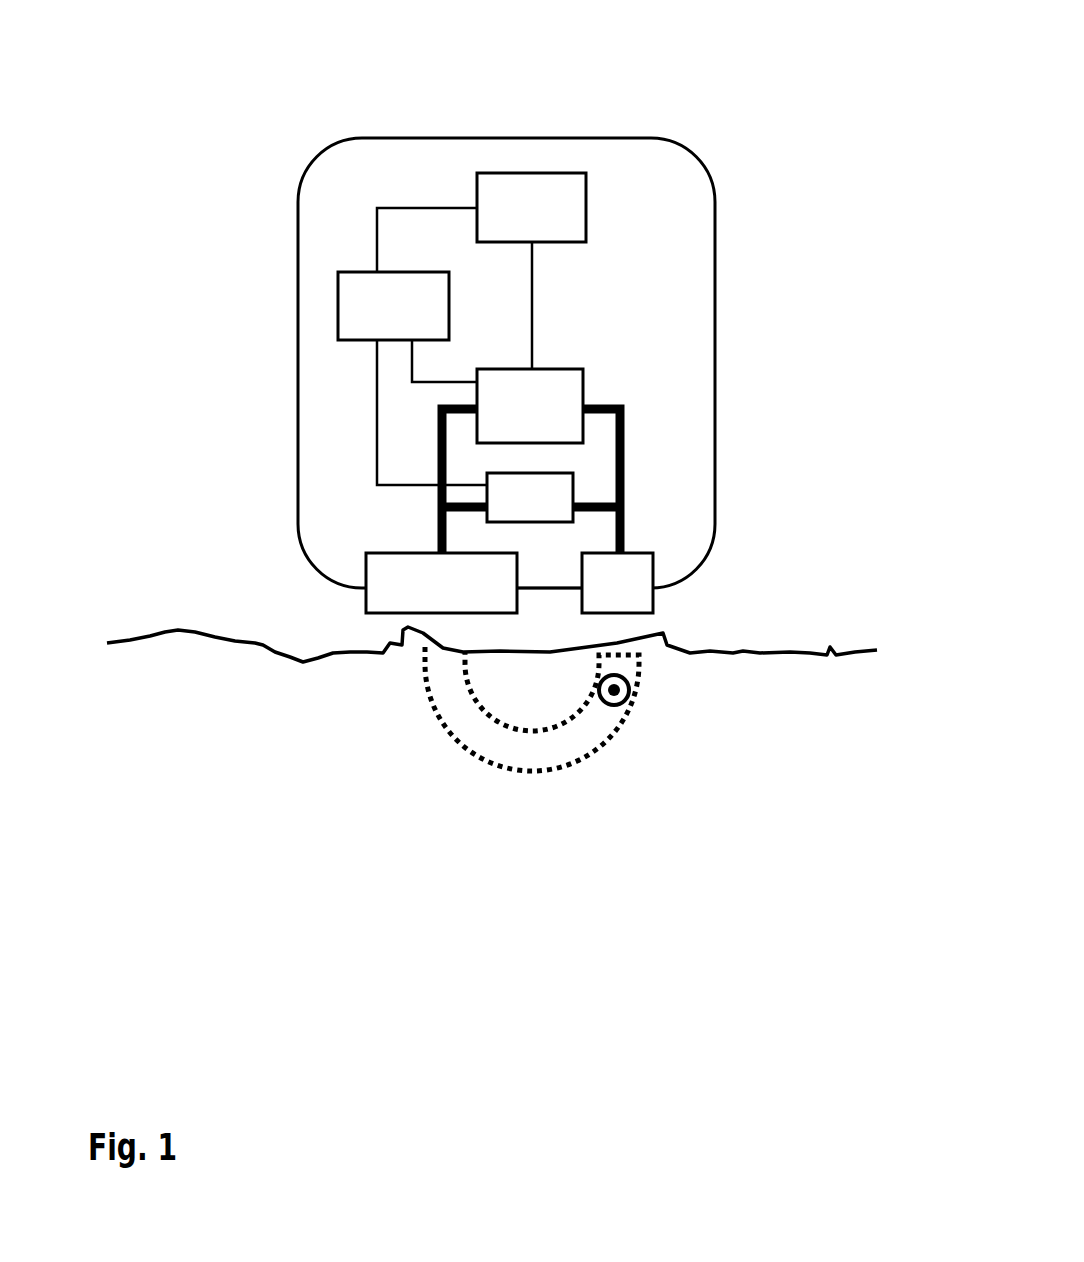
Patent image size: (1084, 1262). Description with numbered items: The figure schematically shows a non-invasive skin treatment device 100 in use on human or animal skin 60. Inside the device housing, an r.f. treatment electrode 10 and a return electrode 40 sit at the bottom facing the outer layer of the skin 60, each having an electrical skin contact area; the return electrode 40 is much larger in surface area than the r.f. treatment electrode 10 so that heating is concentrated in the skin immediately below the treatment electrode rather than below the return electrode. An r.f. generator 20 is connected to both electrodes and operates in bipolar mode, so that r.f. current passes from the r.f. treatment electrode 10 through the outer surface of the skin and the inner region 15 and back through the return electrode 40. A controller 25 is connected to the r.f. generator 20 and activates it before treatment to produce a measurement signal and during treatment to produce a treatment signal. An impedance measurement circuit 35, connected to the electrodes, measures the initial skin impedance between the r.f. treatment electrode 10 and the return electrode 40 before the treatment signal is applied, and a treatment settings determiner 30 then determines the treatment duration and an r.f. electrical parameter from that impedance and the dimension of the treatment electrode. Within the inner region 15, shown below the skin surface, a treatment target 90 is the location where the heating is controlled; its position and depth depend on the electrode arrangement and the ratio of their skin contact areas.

The non-invasive skin treatment device 100 is at (321, 108).
The controller 25 is at (531, 207).
The treatment settings determiner 30 is at (393, 306).
The r.f. generator 20 is at (530, 406).
The impedance measurement circuit 35 is at (530, 497).
The return electrode 40 is at (441, 583).
The r.f. treatment electrode 10 is at (617, 583).
The skin 60 is at (120, 699).
The inner region 15 is at (423, 687).
The treatment target 90 is at (635, 690).